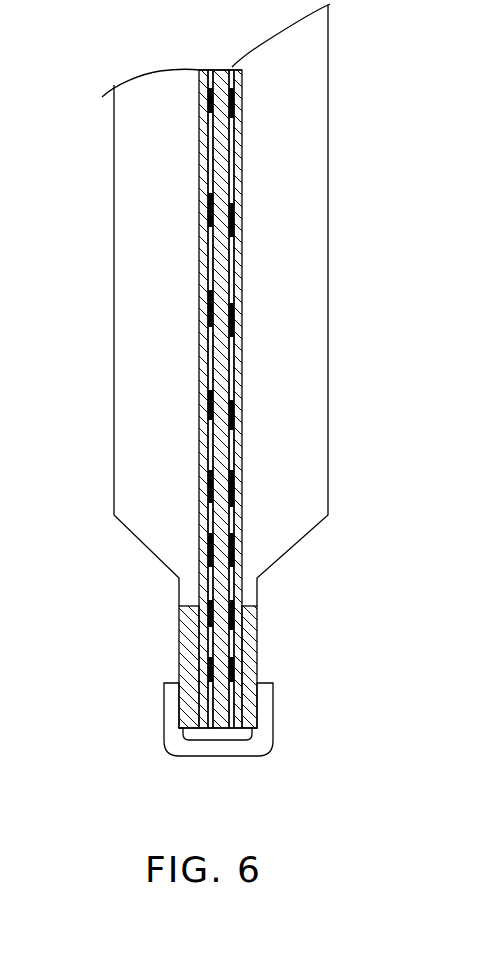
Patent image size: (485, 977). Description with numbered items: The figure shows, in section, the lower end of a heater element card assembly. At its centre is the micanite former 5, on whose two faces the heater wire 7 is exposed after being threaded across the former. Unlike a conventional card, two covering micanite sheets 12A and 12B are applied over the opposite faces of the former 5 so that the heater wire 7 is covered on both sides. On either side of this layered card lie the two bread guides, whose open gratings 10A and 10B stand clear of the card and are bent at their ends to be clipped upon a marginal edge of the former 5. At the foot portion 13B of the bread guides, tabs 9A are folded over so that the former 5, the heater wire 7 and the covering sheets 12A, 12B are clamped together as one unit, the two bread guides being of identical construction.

The micanite former 5 is at (224, 69).
The heater wire 7 is at (234, 218).
The tabs 9A is at (164, 717).
The open grating 10A is at (302, 350).
The open grating 10B is at (127, 347).
The covering micanite sheet 12A is at (243, 163).
The covering micanite sheet 12B is at (203, 164).
The foot portion 13B is at (180, 628).